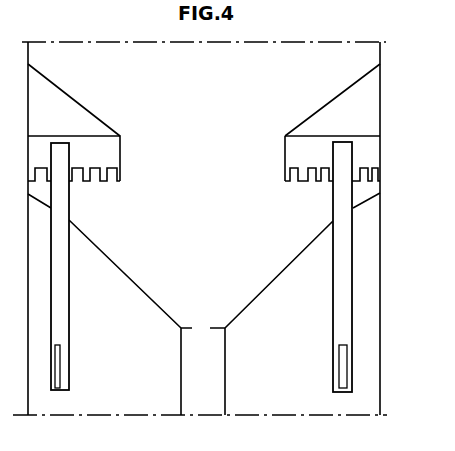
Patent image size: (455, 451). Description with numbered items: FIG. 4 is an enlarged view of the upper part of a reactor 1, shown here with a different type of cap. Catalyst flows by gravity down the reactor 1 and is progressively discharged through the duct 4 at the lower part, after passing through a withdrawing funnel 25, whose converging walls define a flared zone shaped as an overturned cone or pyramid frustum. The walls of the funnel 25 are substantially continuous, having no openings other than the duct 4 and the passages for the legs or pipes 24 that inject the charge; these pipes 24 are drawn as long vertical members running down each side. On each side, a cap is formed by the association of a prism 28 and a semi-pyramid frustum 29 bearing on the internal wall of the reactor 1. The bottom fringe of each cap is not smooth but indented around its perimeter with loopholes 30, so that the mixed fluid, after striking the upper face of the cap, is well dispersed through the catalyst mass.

The housing wall 1 is at (27, 357).
The duct 4 is at (190, 383).
The legs or pipes for injecting the charge 24 is at (70, 337).
The withdrawing funnel 25 is at (259, 292).
The prism 28 is at (105, 144).
The semi-pyramid frustum 29 is at (82, 113).
The loopholes 30 is at (93, 183).